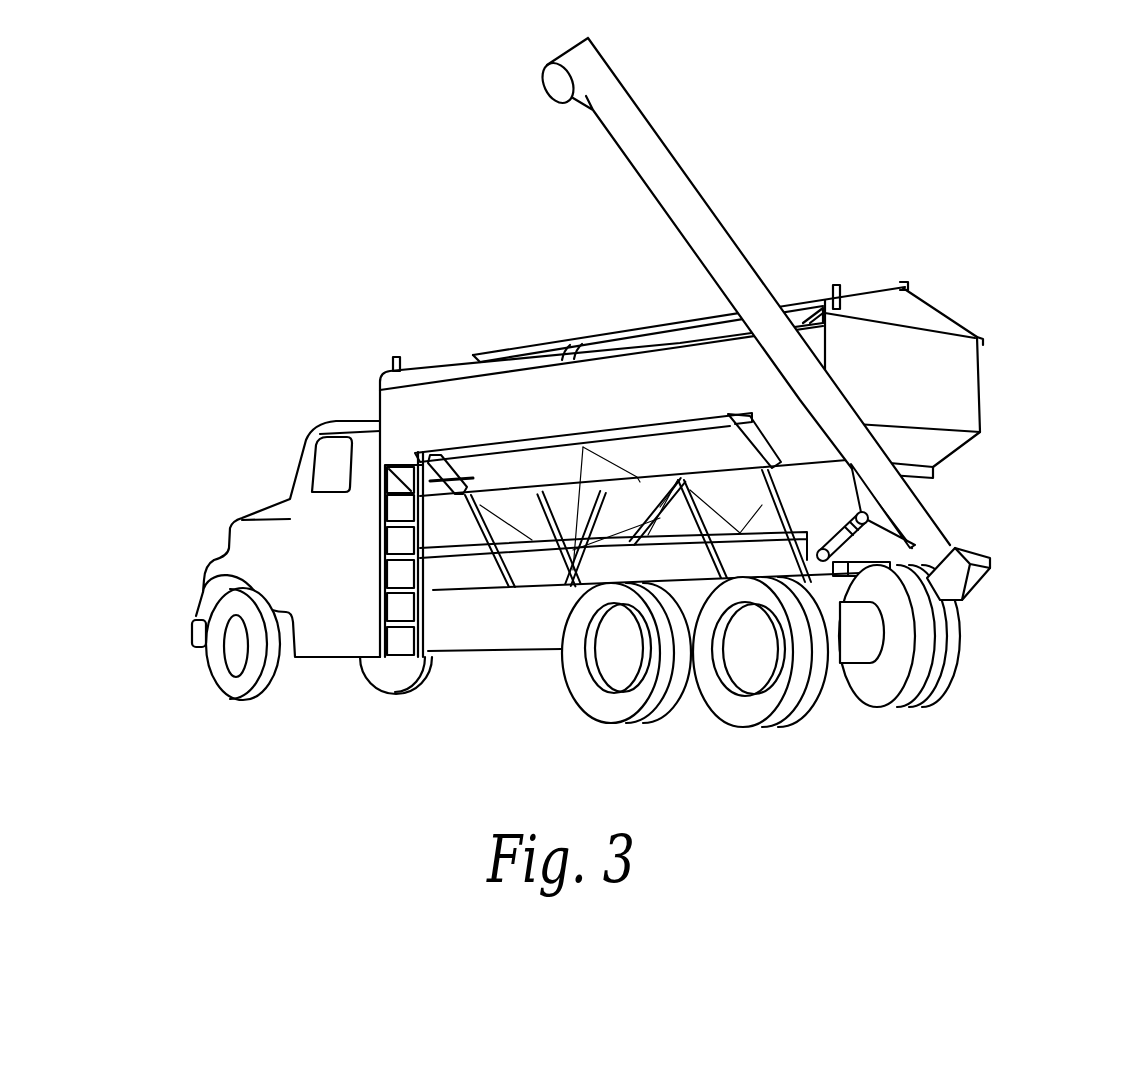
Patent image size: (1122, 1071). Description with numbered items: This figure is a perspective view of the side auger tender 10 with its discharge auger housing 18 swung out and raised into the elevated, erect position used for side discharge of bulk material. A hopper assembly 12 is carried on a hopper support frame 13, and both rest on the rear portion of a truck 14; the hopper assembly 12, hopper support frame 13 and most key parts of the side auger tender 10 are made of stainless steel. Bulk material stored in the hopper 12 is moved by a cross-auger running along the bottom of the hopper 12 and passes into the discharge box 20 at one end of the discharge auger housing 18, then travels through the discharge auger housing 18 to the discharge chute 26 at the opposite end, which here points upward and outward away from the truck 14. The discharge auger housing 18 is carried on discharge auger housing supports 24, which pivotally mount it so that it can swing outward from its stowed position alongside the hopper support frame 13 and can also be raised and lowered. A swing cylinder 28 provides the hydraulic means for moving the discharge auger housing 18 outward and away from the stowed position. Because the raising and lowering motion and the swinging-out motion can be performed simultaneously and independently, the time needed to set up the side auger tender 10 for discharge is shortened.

The side auger tender 10 is at (432, 308).
The hopper assembly 12 is at (970, 382).
The hopper support frame 13 is at (568, 567).
The truck 14 is at (266, 506).
The discharge auger housing 18 is at (692, 180).
The discharge box 20 is at (962, 578).
The discharge auger housing supports 24 is at (890, 530).
The discharge chute 26 is at (560, 83).
The swing cylinder 28 is at (832, 556).